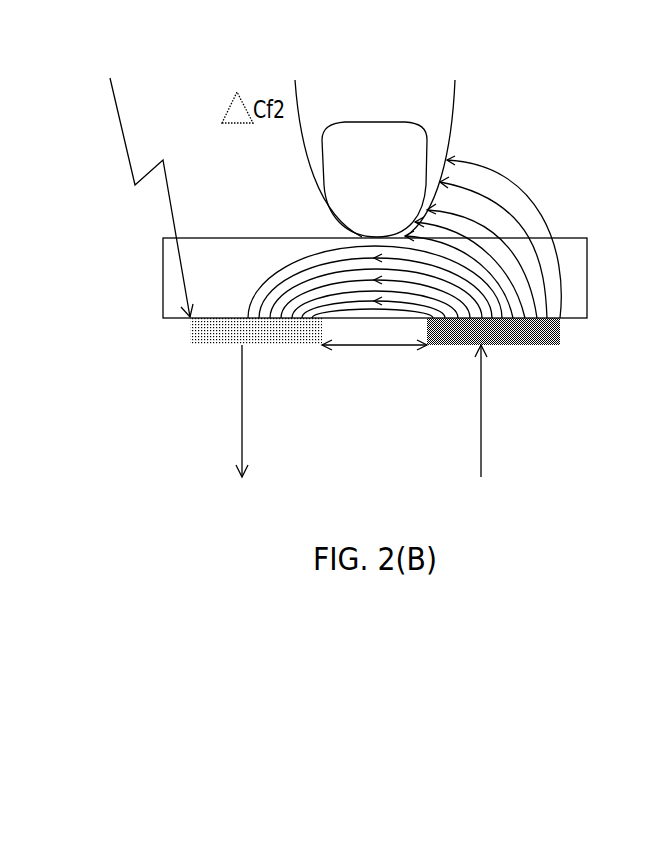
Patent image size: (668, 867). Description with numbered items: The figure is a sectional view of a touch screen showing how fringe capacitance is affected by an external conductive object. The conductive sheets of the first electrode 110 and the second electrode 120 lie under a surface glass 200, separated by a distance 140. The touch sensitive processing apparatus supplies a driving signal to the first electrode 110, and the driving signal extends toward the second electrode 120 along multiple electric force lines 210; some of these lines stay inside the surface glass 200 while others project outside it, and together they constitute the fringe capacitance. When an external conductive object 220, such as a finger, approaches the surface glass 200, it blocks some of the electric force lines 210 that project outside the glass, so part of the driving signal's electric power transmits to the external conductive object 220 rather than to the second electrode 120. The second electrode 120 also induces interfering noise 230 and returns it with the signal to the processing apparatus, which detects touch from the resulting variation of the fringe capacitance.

The first electrode 110 is at (537, 345).
The second electrode 120 is at (215, 345).
The distance 140 is at (387, 345).
The surface glass 200 is at (563, 238).
The electric force lines 210 is at (508, 173).
The external conductive object 220 is at (457, 80).
The noise 230 is at (123, 132).